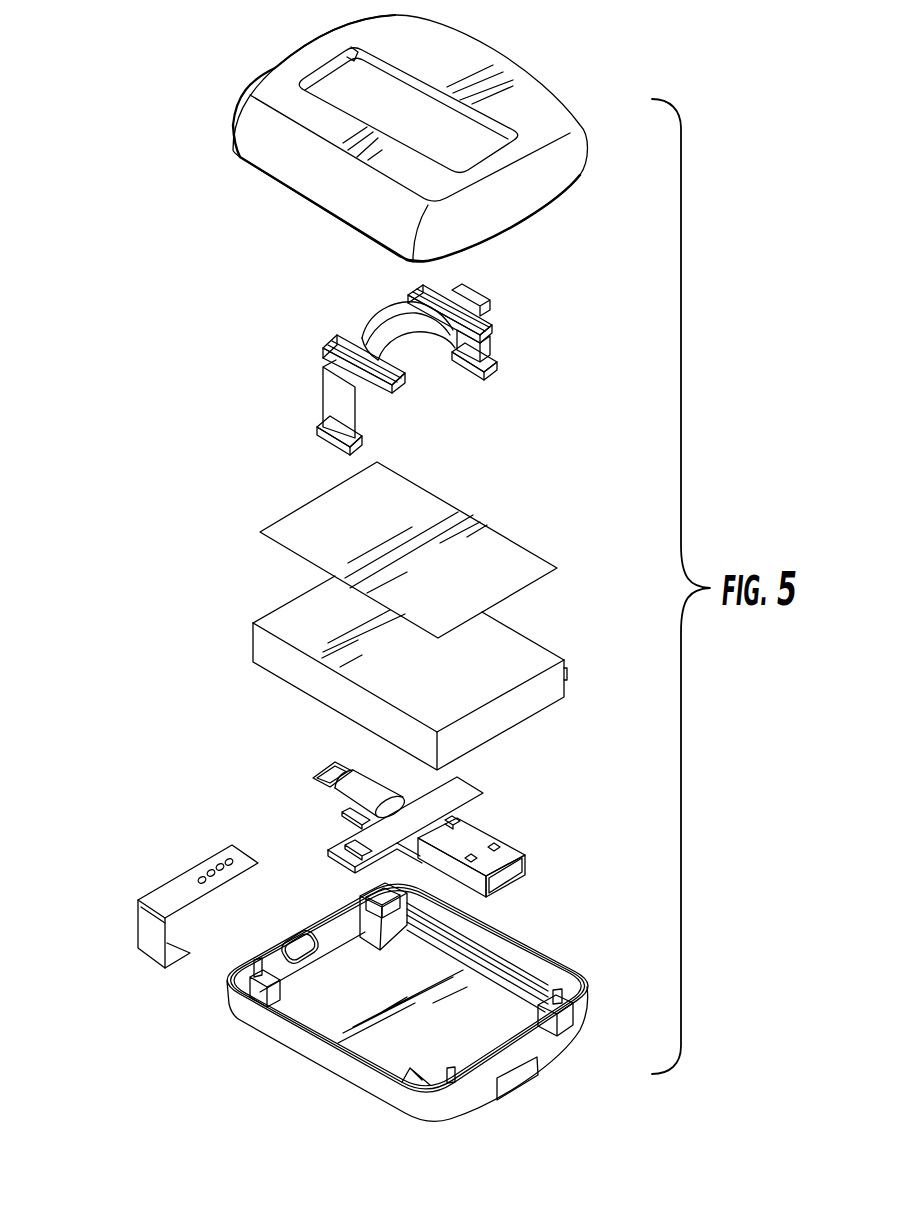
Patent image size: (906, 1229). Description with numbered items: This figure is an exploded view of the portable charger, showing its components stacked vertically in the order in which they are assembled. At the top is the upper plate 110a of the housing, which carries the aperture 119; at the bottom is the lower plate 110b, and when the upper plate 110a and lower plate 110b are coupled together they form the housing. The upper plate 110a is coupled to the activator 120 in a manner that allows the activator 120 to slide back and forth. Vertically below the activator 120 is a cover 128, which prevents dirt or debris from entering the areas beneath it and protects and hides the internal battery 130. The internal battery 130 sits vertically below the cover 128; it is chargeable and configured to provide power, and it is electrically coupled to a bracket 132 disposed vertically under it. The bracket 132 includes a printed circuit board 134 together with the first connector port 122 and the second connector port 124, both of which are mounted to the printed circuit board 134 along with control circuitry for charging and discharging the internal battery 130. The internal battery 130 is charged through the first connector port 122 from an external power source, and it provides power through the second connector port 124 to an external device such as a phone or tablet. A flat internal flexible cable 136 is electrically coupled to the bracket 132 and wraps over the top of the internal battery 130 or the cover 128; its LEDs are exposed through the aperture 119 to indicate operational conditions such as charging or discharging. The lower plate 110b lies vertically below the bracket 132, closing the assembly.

The upper plate 110a is at (354, 133).
The lower plate 110b is at (283, 1040).
The aperture 119 is at (410, 117).
The activator 120 is at (322, 402).
The cover 128 is at (265, 530).
The internal battery 130 is at (253, 648).
The second connector port 124 is at (312, 784).
The bracket 132 is at (305, 829).
The printed circuit board 134 is at (484, 792).
The first connector port 122 is at (518, 877).
The flat internal flexible cable 136 is at (138, 927).